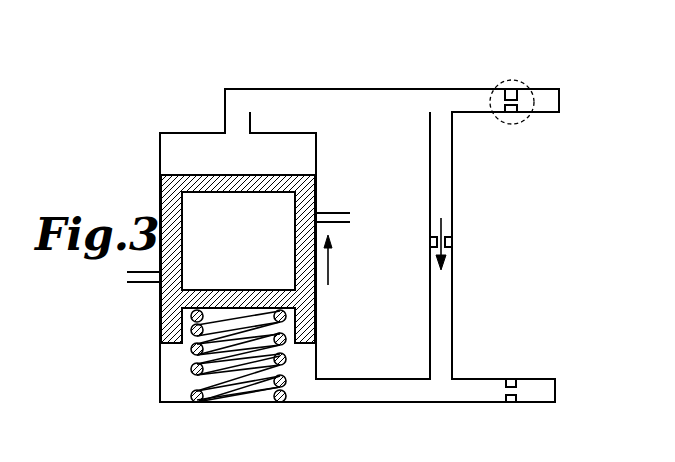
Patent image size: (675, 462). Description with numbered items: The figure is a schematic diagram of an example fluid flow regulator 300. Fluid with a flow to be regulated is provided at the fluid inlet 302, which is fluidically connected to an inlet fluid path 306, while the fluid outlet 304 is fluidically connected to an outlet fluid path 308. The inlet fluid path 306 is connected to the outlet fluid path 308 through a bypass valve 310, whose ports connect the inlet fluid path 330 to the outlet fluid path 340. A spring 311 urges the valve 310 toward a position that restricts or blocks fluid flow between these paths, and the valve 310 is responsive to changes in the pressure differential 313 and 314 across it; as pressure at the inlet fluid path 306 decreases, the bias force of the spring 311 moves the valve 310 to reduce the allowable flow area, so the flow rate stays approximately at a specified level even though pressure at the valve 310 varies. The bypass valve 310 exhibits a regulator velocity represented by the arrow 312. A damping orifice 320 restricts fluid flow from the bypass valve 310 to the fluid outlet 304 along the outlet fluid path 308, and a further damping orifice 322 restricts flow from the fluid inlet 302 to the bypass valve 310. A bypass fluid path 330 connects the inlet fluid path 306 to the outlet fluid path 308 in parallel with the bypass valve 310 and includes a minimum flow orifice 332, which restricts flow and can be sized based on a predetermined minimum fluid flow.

The fluid flow regulator 300 is at (160, 82).
The fluid inlet 302 is at (563, 100).
The fluid outlet 304 is at (563, 391).
The inlet fluid path 306 is at (393, 90).
The outlet fluid path 308 is at (468, 378).
The bypass valve 310 is at (160, 153).
The spring 311 is at (190, 370).
The regulator velocity 312 is at (333, 261).
The pressure differential 313 is at (316, 150).
The pressure differential 314 is at (302, 380).
The damping orifice 320 is at (511, 378).
The damping orifice 322 is at (512, 93).
The bypass fluid path 330 is at (447, 181).
The minimum flow orifice 332 is at (450, 242).
The outlet fluid path 340 is at (125, 279).